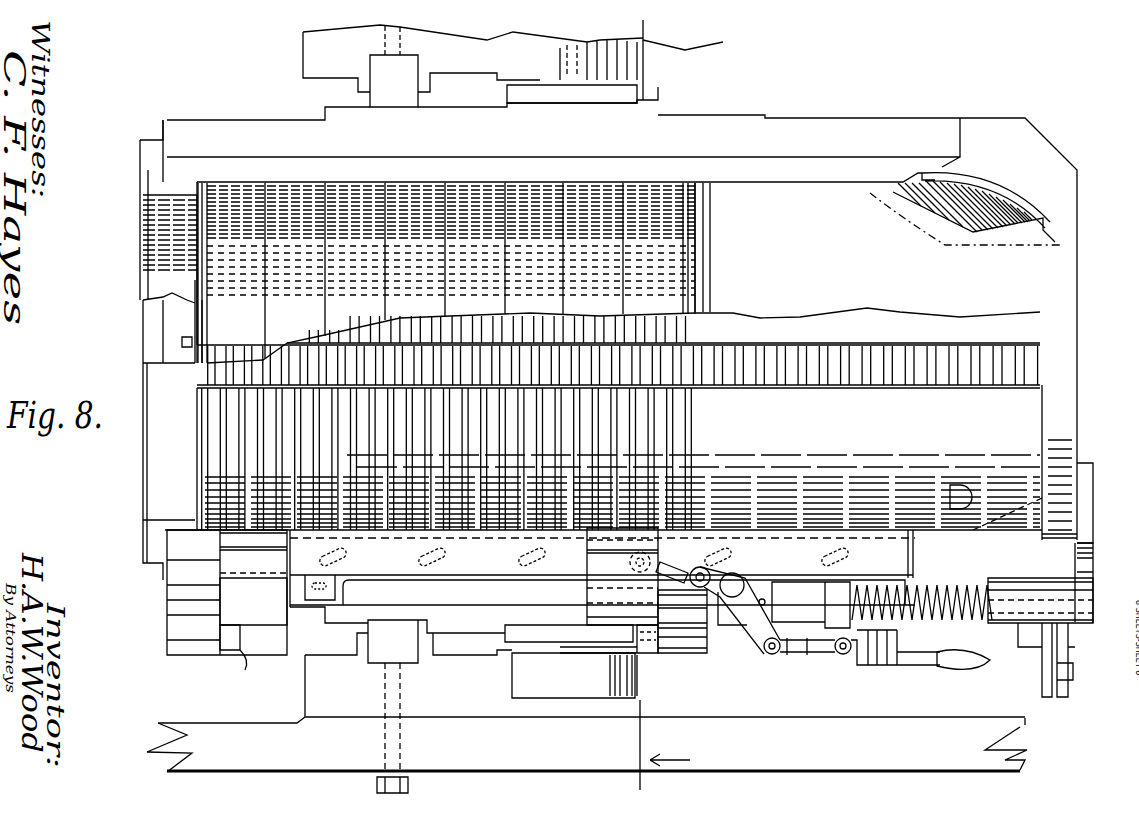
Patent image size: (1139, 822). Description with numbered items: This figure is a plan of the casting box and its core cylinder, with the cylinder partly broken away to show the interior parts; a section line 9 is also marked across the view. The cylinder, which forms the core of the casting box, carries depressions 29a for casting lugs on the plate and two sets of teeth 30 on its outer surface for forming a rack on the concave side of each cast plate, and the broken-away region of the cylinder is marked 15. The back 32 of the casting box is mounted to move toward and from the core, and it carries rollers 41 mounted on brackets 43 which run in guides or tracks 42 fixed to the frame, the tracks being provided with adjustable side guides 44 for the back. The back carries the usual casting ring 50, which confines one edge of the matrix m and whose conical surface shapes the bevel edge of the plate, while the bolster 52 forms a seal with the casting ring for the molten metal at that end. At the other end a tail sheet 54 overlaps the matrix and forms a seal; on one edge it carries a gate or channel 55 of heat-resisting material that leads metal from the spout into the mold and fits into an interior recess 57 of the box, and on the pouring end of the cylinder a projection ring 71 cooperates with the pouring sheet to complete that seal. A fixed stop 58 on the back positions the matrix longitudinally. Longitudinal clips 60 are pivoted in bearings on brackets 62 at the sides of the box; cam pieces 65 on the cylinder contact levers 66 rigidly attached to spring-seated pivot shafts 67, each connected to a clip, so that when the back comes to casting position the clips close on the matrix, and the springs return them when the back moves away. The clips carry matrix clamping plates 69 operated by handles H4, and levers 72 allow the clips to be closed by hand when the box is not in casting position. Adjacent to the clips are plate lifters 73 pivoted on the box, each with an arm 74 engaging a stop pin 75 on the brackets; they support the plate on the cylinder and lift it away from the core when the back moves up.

The section line 9- 9 is at (656, 407).
The field magnet frame 15 is at (905, 305).
The depressions 29a is at (958, 485).
The teeth 30 is at (845, 418).
The back 32 is at (812, 118).
The rollers 41 is at (520, 681).
The guides or tracks 42 is at (648, 653).
The brackets 43 is at (580, 97).
The adjustable side guides 44 is at (375, 647).
The casting ring 50 is at (157, 193).
The bolster 52 is at (208, 347).
The tail sheet 54 is at (830, 252).
The gate or channel 55 is at (973, 190).
The interior recess 57 is at (1017, 195).
The fixed stop 58 is at (182, 343).
The longitudinal clips 60 is at (475, 570).
The brackets 62 is at (1015, 603).
The cam pieces 65 is at (1082, 515).
The levers 66 is at (1052, 578).
The spring-seated pivot shafts 67 is at (930, 555).
The matrix clamping plates 69 is at (805, 563).
The projection ring 71 is at (1067, 422).
The levers 72 is at (1047, 677).
The plate lifters 73 is at (605, 563).
The arm 74 is at (628, 703).
The stop pin 75 is at (590, 703).
The handle H4 is at (970, 665).
The matrix m is at (446, 273).